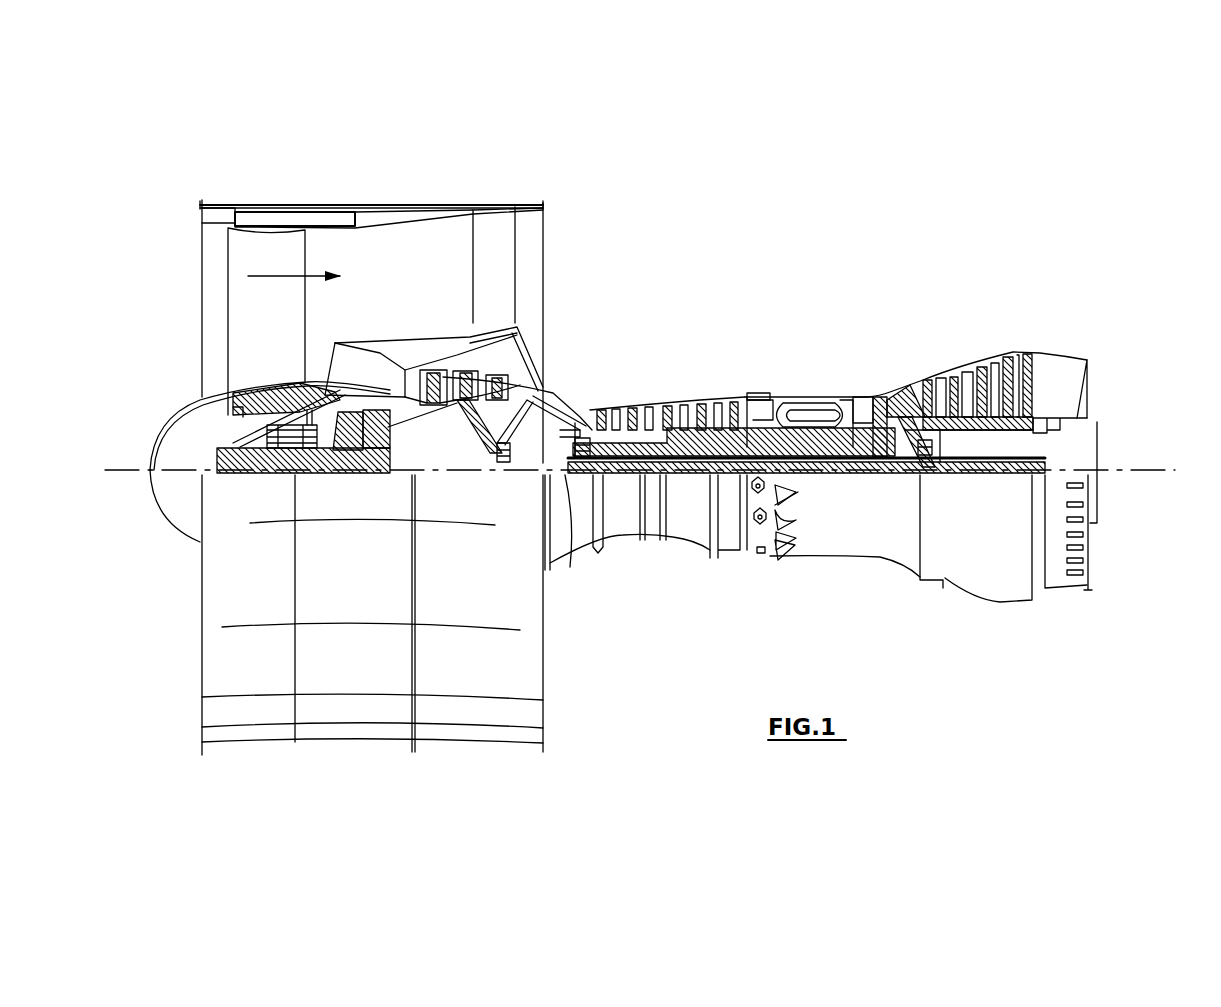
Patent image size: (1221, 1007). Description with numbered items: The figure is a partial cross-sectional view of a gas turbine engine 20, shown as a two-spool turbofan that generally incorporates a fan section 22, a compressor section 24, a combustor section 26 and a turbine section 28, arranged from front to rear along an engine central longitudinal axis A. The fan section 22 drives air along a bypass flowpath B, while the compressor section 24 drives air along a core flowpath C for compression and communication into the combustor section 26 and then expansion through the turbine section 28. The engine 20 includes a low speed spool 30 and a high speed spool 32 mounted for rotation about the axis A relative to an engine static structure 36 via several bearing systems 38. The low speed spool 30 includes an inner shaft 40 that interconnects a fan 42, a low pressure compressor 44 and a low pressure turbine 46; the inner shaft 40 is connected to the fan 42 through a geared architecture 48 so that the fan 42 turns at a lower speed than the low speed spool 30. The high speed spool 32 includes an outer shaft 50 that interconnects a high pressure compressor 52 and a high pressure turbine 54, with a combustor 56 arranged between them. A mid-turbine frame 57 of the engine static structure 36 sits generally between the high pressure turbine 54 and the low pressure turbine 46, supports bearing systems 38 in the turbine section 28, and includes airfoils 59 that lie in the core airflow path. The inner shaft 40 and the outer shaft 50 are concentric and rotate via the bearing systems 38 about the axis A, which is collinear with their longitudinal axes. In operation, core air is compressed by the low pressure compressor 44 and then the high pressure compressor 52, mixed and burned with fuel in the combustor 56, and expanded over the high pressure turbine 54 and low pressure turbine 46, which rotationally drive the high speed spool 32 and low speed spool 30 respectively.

The gas turbine engine 20 is at (806, 252).
The fan section 22 is at (300, 196).
The compressor section 24 is at (593, 383).
The combustor section 26 is at (799, 375).
The turbine section 28 is at (937, 343).
The low speed spool 30 is at (690, 482).
The high speed spool 32 is at (733, 410).
The engine static structure 36 is at (729, 557).
The bearing systems 38 is at (500, 471).
The inner shaft 40 is at (568, 480).
The fan 42 is at (283, 326).
The low pressure compressor 44 is at (482, 380).
The low pressure turbine 46 is at (986, 366).
The geared architecture 48 is at (372, 471).
The outer shaft 50 is at (808, 476).
The high pressure compressor 52 is at (667, 428).
The high pressure turbine 54 is at (862, 397).
The combustor 56 is at (810, 408).
The mid-turbine frame 57 is at (905, 383).
The airfoils 59 is at (912, 435).
The engine central longitudinal axis A is at (1160, 470).
The bypass flowpath B is at (282, 276).
The core flowpath C is at (376, 374).